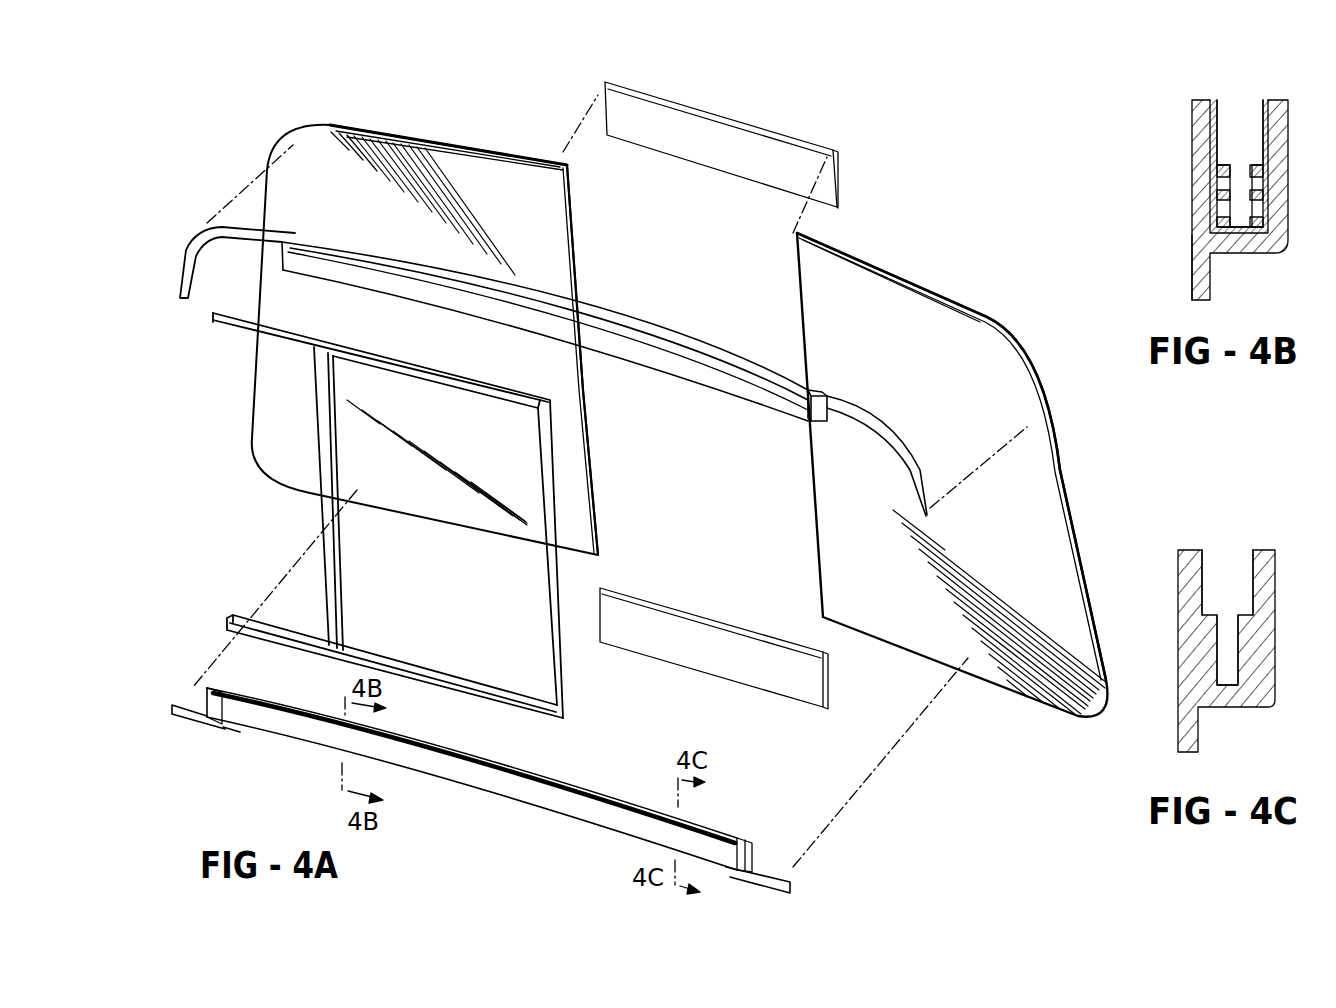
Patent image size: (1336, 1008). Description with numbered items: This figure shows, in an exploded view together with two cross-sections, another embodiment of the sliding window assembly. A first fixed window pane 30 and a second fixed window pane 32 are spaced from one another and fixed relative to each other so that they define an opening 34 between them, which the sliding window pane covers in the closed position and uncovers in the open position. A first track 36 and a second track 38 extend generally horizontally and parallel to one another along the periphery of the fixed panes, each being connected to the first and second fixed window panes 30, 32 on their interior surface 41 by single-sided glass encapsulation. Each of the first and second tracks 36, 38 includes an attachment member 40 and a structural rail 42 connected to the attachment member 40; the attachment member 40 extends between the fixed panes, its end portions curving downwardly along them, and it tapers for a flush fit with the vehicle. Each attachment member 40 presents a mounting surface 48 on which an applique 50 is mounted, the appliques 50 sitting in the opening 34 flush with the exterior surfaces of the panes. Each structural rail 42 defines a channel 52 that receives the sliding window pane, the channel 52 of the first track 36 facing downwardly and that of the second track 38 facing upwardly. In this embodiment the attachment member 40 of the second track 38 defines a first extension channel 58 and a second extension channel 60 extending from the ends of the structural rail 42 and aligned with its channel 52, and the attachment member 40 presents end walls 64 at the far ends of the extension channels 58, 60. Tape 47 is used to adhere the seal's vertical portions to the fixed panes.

In FIG. 4A, the first fixed window pane 30 is at (511, 228).
In FIG. 4A, the second fixed window pane 32 is at (895, 356).
In FIG. 4A, the opening 34 is at (617, 198).
In FIG. 4A, the first track 36 is at (606, 326).
In FIG. 4A, the second track 38 is at (443, 770).
In FIG. 4B, the second track 38 is at (1295, 233).
In FIG. 4A, the attachment member 40 is at (903, 434).
In FIG. 4B, the attachment member 40 is at (1191, 235).
In FIG. 4C, the attachment member 40 is at (1265, 653).
In FIG. 4A, the interior surface 41 is at (313, 157).
In FIG. 4B, the structural rail 42 is at (1202, 132).
In FIG. 4A, the tape 47 is at (333, 390).
In FIG. 4A, the mounting surface 48 is at (683, 332).
In FIG. 4A, the applique 50 is at (705, 122).
In FIG. 4A, the channel 52 is at (487, 757).
In FIG. 4B, the channel 52 is at (1252, 108).
In FIG. 4A, the first extension channel 58 is at (210, 697).
In FIG. 4A, the second extension channel 60 is at (713, 828).
In FIG. 4C, the second extension channel 60 is at (1215, 558).
In FIG. 4A, the end wall 64 is at (278, 260).
In FIG. 4B, the end wall 64 is at (1229, 144).
In FIG. 4C, the end wall 64 is at (1215, 591).